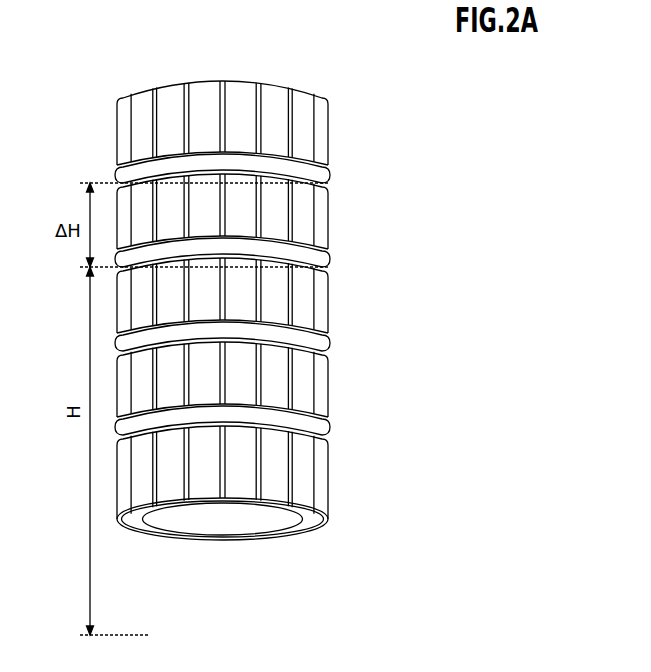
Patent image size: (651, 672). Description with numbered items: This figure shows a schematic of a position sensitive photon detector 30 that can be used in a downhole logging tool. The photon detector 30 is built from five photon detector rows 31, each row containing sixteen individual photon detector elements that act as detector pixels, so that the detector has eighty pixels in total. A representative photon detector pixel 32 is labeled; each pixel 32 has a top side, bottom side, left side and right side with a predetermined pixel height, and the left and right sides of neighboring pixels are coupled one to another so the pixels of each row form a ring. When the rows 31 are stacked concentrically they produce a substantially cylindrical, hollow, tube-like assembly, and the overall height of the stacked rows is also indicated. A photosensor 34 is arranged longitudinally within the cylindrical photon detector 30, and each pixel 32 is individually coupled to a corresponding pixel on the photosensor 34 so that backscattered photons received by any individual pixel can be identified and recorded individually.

The photon detector 30 is at (412, 175).
The photon detector row 31 is at (322, 475).
The photon detector pixel 32 is at (143, 97).
The photosensor 34 is at (222, 518).